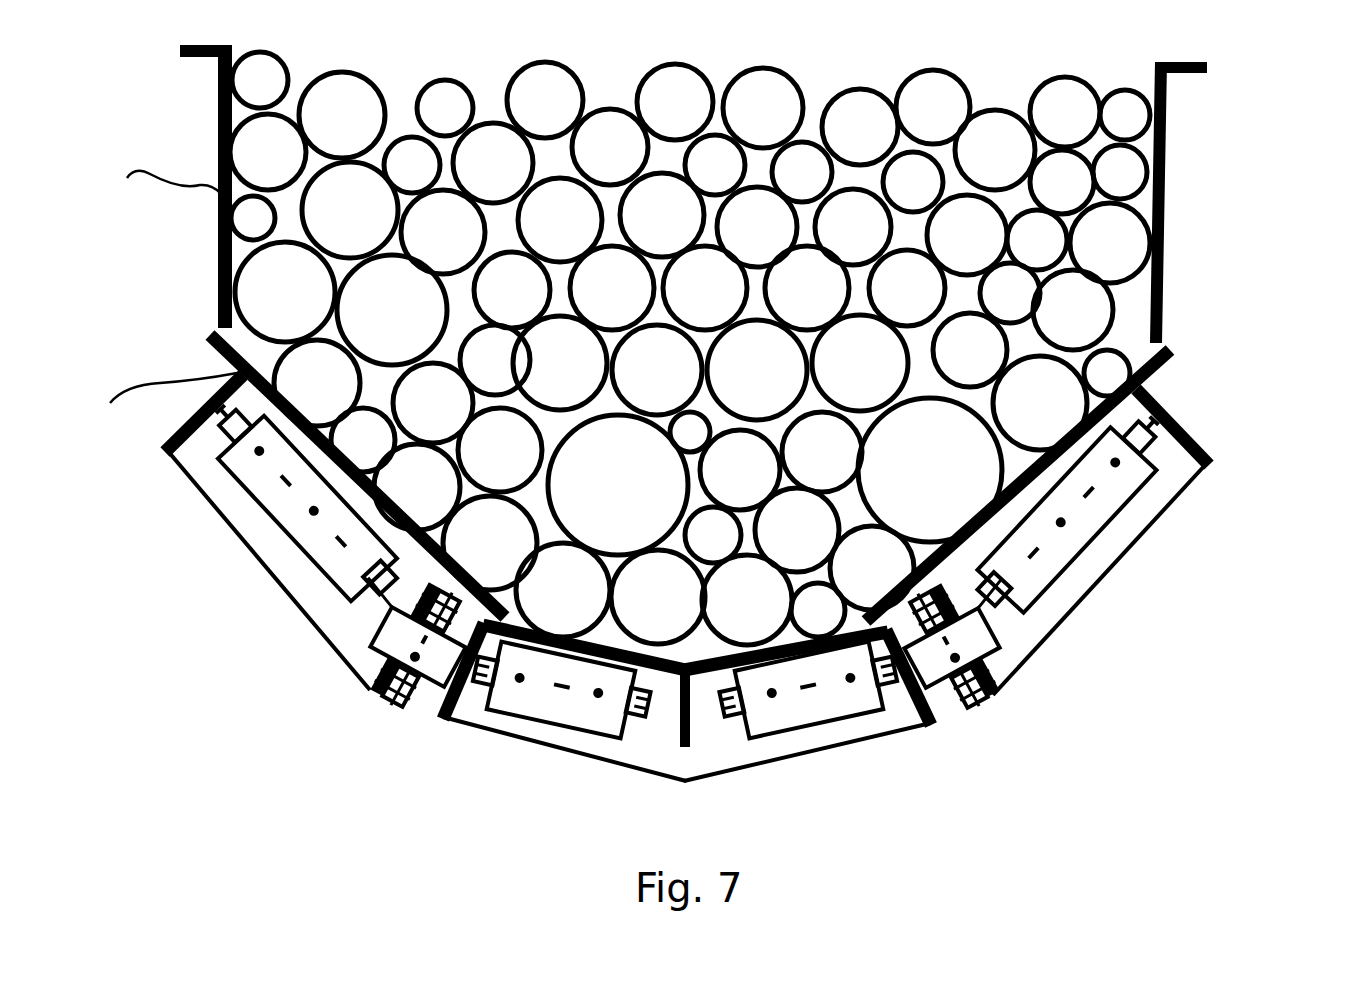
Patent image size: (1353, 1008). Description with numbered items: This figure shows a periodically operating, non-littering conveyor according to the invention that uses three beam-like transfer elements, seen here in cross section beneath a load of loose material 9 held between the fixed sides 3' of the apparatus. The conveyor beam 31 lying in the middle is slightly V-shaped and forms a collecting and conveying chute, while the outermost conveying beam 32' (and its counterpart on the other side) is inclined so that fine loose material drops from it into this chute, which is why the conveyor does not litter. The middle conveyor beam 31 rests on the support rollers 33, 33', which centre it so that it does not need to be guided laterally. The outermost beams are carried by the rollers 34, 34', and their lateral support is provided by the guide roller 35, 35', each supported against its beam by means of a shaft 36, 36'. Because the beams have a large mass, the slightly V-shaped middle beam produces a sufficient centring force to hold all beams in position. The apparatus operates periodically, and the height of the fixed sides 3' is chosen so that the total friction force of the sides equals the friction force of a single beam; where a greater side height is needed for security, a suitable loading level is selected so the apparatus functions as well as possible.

The particulate material (balls) 9 is at (260, 287).
The fixed side 3' is at (1206, 202).
The outermost conveying beam 32' is at (1093, 485).
The conveyor beam 31 is at (707, 680).
The roller 34 is at (263, 532).
The roller 34' is at (1102, 542).
The guide roller 35 is at (344, 641).
The guide roller 35' is at (1018, 638).
The shaft 36 is at (371, 734).
The shaft 36' is at (1005, 717).
The support roller 33 is at (564, 724).
The support roller 33' is at (812, 729).